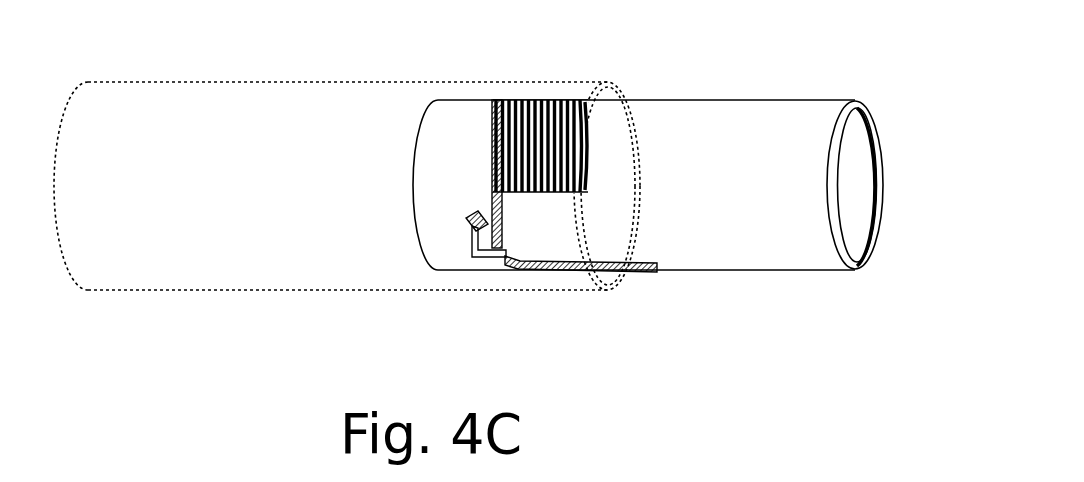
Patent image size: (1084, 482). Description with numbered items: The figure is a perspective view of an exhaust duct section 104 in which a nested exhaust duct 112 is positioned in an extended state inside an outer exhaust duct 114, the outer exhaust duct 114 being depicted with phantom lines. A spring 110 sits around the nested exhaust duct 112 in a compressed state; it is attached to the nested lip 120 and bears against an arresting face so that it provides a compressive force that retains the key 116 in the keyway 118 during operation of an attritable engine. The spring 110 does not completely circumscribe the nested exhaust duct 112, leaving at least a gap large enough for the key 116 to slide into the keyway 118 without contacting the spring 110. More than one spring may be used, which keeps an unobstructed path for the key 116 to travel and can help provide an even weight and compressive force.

The exhaust duct section 104 is at (874, 268).
The spring 110 is at (560, 102).
The nested exhaust duct 112 is at (719, 184).
The outer exhaust duct 114 is at (199, 196).
The key 116 is at (466, 220).
The keyway 118 is at (491, 256).
The nested lip 120 is at (517, 260).